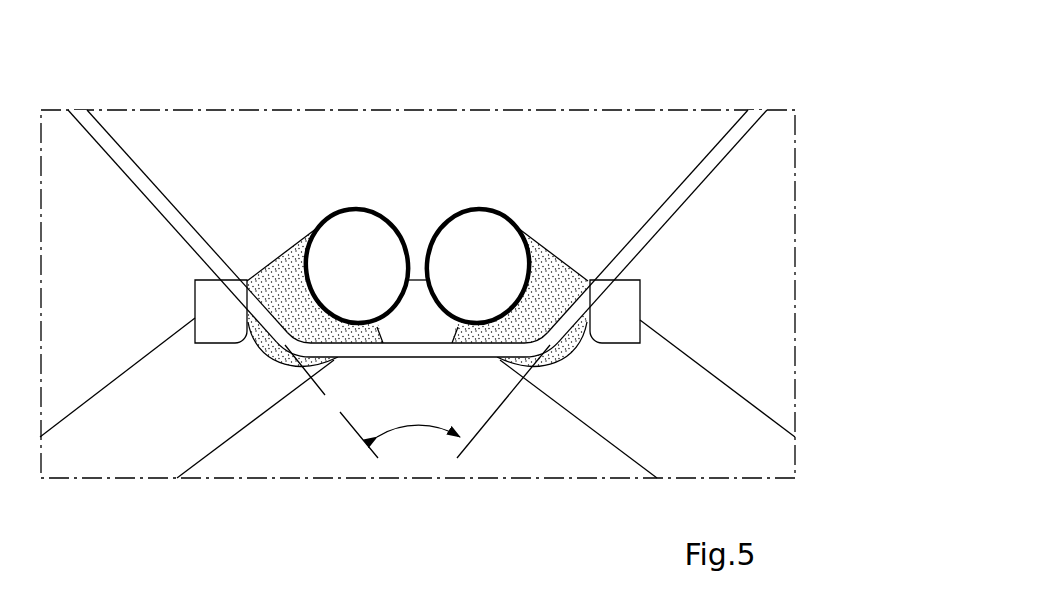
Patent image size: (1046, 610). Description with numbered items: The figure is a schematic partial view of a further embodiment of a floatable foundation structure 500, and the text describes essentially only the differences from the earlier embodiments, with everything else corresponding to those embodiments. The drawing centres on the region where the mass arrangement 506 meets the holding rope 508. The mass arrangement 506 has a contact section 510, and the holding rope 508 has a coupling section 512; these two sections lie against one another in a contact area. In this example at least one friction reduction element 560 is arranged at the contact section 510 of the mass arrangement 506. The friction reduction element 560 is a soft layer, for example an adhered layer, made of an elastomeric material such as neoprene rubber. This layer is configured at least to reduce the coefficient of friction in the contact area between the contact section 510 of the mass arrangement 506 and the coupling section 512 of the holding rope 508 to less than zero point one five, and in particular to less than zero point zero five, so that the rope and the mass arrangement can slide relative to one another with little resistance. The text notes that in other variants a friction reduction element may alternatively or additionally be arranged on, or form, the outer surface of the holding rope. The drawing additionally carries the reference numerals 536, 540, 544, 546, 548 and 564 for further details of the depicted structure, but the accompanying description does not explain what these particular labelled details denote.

The floatable foundation structure 500 is at (739, 68).
The mass arrangement 506 is at (725, 195).
The holding rope 508 is at (155, 197).
The contact section 510 is at (460, 253).
The coupling section 512 is at (256, 358).
The substrate surface 536 is at (117, 395).
The bond pad 540 is at (625, 307).
The inner surface of second sidewall 544 is at (674, 238).
The inner surface of first sidewall 546 is at (166, 238).
The bottom wall 548 is at (353, 382).
The friction reduction element 560 is at (287, 262).
The angle 564 is at (412, 427).